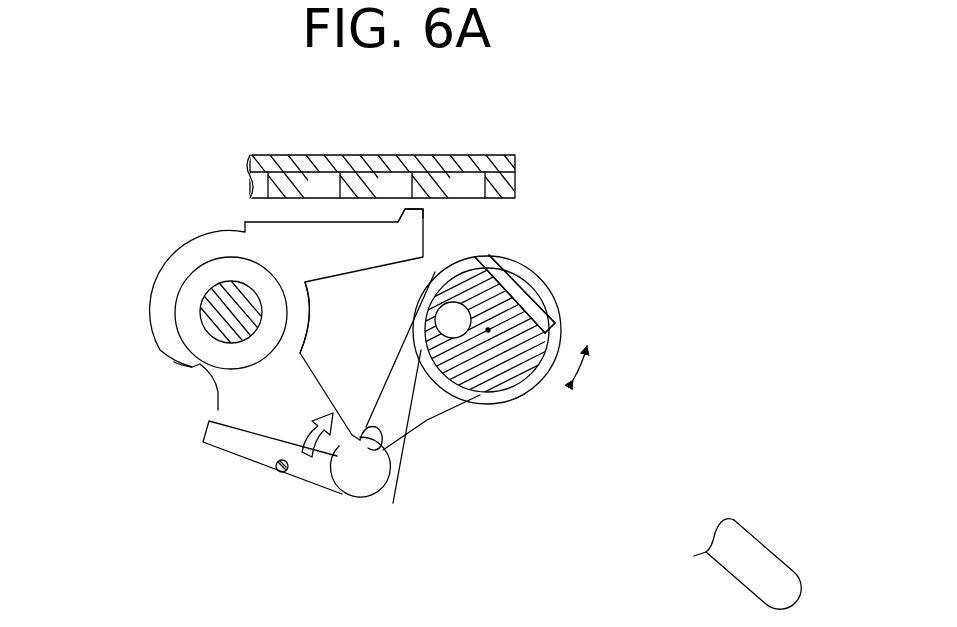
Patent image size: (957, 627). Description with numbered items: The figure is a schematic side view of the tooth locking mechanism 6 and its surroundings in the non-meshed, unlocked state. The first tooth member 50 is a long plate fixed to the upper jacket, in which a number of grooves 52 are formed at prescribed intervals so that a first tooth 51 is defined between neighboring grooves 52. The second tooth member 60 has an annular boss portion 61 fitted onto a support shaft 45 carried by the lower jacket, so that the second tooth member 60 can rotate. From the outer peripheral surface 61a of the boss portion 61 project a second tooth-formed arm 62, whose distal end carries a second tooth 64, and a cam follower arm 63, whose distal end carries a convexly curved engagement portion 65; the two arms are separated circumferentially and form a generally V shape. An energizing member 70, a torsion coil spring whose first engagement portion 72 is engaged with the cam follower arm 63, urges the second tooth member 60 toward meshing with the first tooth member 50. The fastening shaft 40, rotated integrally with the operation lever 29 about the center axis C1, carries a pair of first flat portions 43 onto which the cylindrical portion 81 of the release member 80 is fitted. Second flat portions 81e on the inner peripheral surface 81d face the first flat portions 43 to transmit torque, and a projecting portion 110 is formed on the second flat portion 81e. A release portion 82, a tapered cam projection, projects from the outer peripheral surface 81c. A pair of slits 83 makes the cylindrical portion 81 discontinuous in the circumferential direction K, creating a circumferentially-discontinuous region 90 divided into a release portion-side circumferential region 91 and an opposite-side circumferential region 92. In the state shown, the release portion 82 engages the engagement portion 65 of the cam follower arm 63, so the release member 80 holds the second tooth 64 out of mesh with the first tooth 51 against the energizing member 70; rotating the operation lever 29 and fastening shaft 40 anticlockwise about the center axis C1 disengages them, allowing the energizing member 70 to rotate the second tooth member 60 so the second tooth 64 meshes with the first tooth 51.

The tooth locking mechanism 6 is at (212, 211).
The first tooth member 50 is at (516, 160).
The first tooth 51 is at (357, 190).
The groove 52 is at (318, 182).
The second tooth member 60 is at (156, 282).
The boss portion 61 is at (193, 297).
The outer peripheral surface 61a is at (198, 363).
The support shaft 45 is at (222, 317).
The second tooth-formed arm 62 is at (338, 262).
The second tooth 64 is at (427, 215).
The cam follower arm 63 is at (343, 477).
The engagement portion 65 is at (370, 427).
The energizing member 70 is at (231, 453).
The first engagement portion 72 is at (282, 474).
The first flat portion 43 is at (650, 275).
The release member 80 is at (489, 354).
The release portion 82 is at (433, 417).
The release portion-side circumferential region 91 is at (470, 387).
The cylindrical portion 81 is at (567, 325).
The outer peripheral surface 81c is at (526, 284).
The inner peripheral surface 81d is at (478, 312).
The second flat portion 81e is at (473, 283).
The slit 83 is at (450, 260).
The circumferentially-discontinuous region 90 is at (542, 273).
The opposite-side circumferential region 92 is at (550, 281).
The center axis C1 is at (489, 333).
The projecting portion 110 is at (528, 376).
The fastening shaft 40 is at (548, 385).
The circumferential direction K is at (586, 362).
The operation lever 29 is at (770, 572).